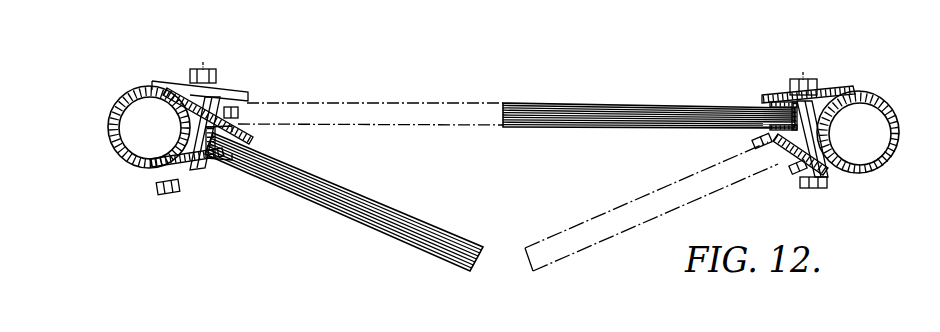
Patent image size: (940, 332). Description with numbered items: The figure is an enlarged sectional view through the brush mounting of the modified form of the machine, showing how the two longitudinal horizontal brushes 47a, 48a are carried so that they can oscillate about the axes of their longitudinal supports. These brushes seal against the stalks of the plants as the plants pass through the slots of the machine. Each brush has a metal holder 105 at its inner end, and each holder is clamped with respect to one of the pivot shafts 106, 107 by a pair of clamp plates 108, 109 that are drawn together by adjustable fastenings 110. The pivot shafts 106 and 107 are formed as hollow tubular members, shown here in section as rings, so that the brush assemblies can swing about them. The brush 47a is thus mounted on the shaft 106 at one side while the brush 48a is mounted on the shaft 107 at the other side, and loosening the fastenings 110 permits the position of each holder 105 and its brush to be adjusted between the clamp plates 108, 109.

The longitudinal horizontal brush 47a is at (380, 208).
The longitudinal horizontal brush 48a is at (586, 110).
The metal holder 105 is at (228, 160).
The pivot shaft 106 is at (131, 96).
The pivot shaft 107 is at (893, 97).
The clamp plate 108 is at (253, 138).
The clamp plate 109 is at (204, 162).
The adjustable fastening 110 is at (160, 186).